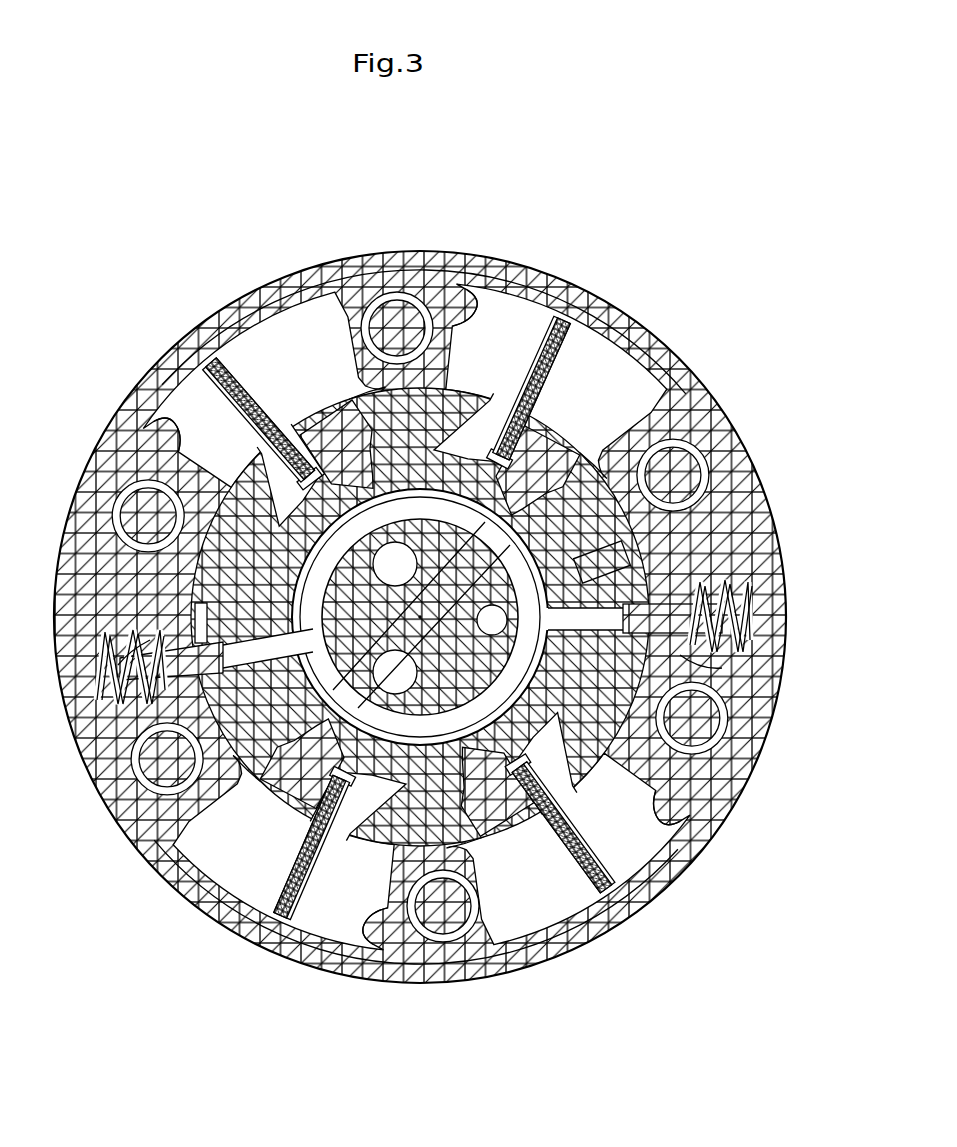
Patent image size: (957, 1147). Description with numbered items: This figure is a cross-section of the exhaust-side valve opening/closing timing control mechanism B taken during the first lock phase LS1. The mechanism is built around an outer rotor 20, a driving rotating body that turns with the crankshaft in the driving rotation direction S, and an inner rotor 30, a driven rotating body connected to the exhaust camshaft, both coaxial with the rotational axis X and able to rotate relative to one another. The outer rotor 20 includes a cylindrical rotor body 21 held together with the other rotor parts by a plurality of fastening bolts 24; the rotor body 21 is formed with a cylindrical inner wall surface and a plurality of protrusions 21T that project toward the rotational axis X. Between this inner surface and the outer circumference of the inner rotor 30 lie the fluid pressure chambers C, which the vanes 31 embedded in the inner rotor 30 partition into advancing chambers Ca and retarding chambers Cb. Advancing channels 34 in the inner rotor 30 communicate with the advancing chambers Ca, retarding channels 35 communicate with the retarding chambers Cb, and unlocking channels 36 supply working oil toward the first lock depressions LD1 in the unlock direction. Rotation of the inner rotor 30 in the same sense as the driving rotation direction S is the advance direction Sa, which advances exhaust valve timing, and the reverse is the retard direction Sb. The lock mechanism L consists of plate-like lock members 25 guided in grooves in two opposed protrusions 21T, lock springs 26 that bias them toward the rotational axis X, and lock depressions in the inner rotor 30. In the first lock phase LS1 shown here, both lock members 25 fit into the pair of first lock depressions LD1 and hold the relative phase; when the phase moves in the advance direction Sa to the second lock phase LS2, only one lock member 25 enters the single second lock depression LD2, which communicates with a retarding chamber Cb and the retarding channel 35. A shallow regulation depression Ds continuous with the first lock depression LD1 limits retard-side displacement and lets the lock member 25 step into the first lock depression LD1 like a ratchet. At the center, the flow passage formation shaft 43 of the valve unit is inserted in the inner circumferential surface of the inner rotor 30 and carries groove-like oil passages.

The outer rotor 20 is at (738, 448).
The rotor body 21 is at (262, 292).
The protrusions 21T is at (462, 298).
The fastening bolts 24 is at (389, 314).
The lock members 25 is at (690, 655).
The lock springs 26 is at (722, 620).
The inner rotor 30 is at (172, 706).
The vanes 31 is at (553, 378).
The advancing channels 34 is at (262, 475).
The retarding channels 35 is at (350, 450).
The unlocking channels 36 is at (298, 640).
The flow passage formation shaft 43 is at (425, 718).
The first lock depressions LD1 is at (545, 640).
The second lock depression LD2 is at (633, 560).
The lock mechanism L is at (745, 590).
The regulation depression Ds is at (190, 610).
The first lock phase LS1 is at (210, 344).
The second lock phase LS2 is at (340, 399).
The rotational axis X is at (420, 618).
The exhaust-side valve opening/closing timing control mechanism B is at (420, 216).
The fluid pressure chambers C is at (523, 328).
The driving rotation direction S is at (661, 255).
The advance direction Sa is at (710, 333).
The retard direction Sb is at (700, 323).
The advancing chambers Ca is at (199, 424).
The retarding chambers Cb is at (290, 386).